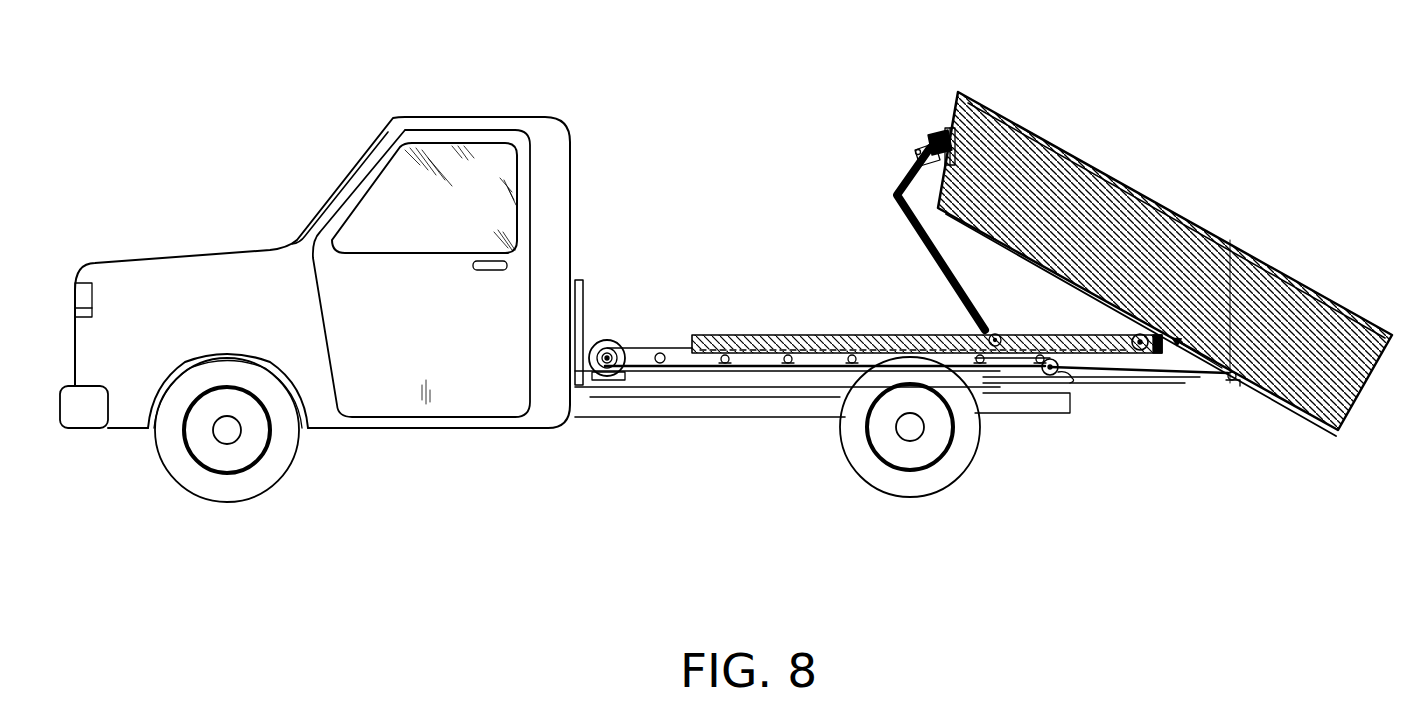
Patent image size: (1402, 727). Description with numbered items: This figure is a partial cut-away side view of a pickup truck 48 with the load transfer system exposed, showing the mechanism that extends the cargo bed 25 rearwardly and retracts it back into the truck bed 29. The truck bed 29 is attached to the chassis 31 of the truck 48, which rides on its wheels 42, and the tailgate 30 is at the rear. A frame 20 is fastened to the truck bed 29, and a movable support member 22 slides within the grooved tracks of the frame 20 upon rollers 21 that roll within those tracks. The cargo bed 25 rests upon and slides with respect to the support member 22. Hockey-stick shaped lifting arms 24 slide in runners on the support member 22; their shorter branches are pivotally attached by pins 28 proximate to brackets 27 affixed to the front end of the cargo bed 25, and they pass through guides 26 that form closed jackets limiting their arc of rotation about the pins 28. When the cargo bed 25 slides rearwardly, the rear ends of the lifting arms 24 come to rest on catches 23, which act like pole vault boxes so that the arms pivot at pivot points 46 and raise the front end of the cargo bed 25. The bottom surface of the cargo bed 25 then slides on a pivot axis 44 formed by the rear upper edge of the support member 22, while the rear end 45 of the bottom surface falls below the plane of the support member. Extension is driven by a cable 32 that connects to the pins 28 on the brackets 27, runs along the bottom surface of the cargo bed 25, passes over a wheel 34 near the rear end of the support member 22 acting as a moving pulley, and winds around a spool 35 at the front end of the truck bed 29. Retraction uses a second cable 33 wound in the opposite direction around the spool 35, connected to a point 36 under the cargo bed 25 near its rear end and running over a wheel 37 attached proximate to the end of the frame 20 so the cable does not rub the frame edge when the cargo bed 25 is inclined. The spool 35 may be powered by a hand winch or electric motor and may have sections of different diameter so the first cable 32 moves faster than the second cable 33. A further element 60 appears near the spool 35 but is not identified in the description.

The frame 20 is at (698, 372).
The rollers 21 is at (792, 350).
The movable support member 22 is at (735, 335).
The catches 23 is at (995, 334).
The lifting arms 24 is at (930, 265).
The movable cargo bed 25 is at (1105, 212).
The guides 26 is at (915, 152).
The brackets 27 is at (947, 128).
The pins 28 is at (925, 137).
The truck bed 29 is at (582, 388).
The tailgate 30 is at (1113, 385).
The chassis 31 is at (645, 415).
The cable 32 is at (1055, 268).
The second cable 33 is at (1170, 375).
The wheel 34 is at (1132, 336).
The spool 35 is at (606, 340).
The point 36 is at (1234, 384).
The wheel 37 is at (1055, 382).
The wheels 42 is at (928, 440).
The pivot axis 44 is at (1212, 385).
The rear end 45 is at (1334, 436).
The pivot points 46 is at (990, 328).
The pickup truck 48 is at (558, 155).
The stop 60 is at (665, 350).